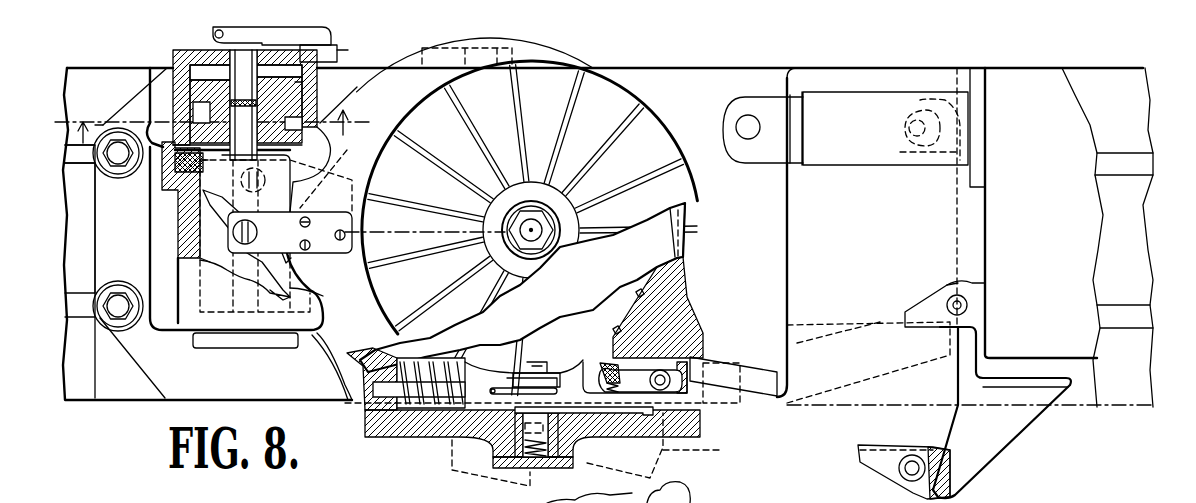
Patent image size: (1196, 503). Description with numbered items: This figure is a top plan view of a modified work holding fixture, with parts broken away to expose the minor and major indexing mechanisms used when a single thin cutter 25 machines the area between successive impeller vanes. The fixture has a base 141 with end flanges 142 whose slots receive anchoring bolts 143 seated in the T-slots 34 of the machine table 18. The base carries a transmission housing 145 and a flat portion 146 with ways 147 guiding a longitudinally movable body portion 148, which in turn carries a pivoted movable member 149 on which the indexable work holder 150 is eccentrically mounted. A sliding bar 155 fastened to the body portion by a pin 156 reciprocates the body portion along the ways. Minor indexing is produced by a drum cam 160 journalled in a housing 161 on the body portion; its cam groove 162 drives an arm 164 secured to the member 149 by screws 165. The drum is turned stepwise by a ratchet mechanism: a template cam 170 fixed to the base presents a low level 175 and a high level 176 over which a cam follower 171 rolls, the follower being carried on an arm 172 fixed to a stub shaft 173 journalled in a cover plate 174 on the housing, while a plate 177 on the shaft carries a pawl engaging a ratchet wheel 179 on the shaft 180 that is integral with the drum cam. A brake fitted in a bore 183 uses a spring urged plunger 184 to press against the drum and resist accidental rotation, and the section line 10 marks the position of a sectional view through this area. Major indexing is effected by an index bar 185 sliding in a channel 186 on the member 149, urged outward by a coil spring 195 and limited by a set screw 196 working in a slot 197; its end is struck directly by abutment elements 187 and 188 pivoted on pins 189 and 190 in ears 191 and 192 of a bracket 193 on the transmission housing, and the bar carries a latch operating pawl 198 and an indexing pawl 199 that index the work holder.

The section line 10- 10 is at (218, 120).
The table 18 is at (103, 388).
The single thin cutter 25 is at (418, 224).
The T-slots 34 is at (82, 162).
The base 141 is at (831, 59).
The end flanges 142 is at (106, 240).
The anchoring bolts 143 is at (118, 165).
The transmission housing 145 is at (1028, 77).
The flat portion 146 is at (782, 275).
The ways 147 is at (830, 322).
The body portion 148 is at (306, 400).
The movable member 149 is at (330, 333).
The indexable work holder 150 is at (684, 243).
The sliding bar 155 is at (874, 98).
The pin 156 is at (749, 122).
The drum cam 160 is at (215, 258).
The housing 161 is at (190, 223).
The cam groove 162 is at (220, 205).
The arm 164 is at (290, 258).
The screws 165 is at (307, 218).
The template cam 170 is at (411, 43).
The cam follower 171 is at (362, 54).
The arm 172 is at (292, 36).
The stub shaft 173 is at (251, 55).
The cover plate 174 is at (200, 50).
The low level 175 is at (488, 50).
The high level 176 is at (372, 52).
The plate 177 is at (295, 82).
The ratchet wheel 179 is at (285, 110).
The shaft 180 is at (250, 111).
The bore 183 is at (200, 168).
The spring urged plunger 184 is at (200, 166).
The index bar 185 is at (729, 369).
The channel 186 is at (688, 366).
The abutment element 187 is at (918, 308).
The abutment element 188 is at (889, 455).
The pin 189 is at (974, 311).
The pin 190 is at (907, 476).
The ear 191 is at (952, 290).
The ear 192 is at (895, 475).
The bracket 193 is at (954, 414).
The coil spring 195 is at (418, 404).
The set screw 196 is at (507, 379).
The slot 197 is at (497, 391).
The latch operating pawl 198 is at (578, 413).
The indexing pawl 199 is at (607, 364).